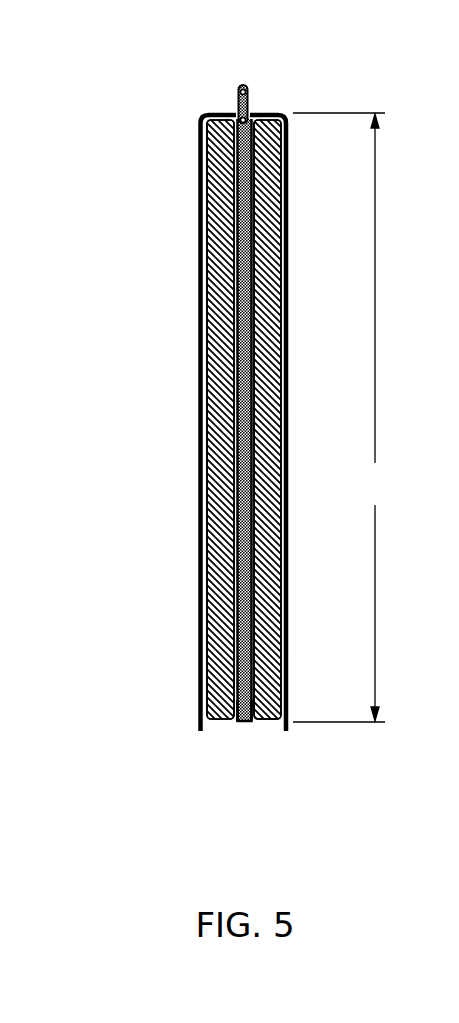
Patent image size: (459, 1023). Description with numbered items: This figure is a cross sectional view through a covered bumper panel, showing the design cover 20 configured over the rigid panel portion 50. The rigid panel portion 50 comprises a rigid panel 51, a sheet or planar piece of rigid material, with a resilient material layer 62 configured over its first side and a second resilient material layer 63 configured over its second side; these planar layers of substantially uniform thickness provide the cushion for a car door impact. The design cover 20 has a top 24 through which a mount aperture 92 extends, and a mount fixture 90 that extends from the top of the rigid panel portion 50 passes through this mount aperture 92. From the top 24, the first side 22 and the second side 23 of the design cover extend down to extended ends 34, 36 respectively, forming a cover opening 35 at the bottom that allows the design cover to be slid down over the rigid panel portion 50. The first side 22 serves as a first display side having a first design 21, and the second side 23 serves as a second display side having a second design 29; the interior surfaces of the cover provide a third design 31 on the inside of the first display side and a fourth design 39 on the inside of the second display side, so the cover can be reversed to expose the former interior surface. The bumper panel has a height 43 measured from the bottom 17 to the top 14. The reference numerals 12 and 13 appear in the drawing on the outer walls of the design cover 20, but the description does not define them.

The first housing side wall 12 is at (198, 500).
The second housing side wall 13 is at (288, 462).
The top 14 is at (272, 116).
The bottom 17 is at (202, 733).
The design cover 20 is at (225, 106).
The first design 21 is at (200, 317).
The first side 22 is at (198, 363).
The second side 23 is at (288, 387).
The top of the design cover 24 is at (229, 118).
The second design 29 is at (288, 333).
The third design 31 is at (212, 300).
The extended end 34 is at (202, 732).
The cover opening 35 is at (257, 726).
The extended end 36 is at (285, 733).
The fourth design 39 is at (278, 305).
The height 43 is at (341, 417).
The rigid panel portion 50 is at (190, 461).
The rigid panel 51 is at (243, 722).
The resilient material layer 62 is at (172, 419).
The second resilient material layer 63 is at (306, 464).
The mount fixture 90 is at (254, 82).
The mount aperture 92 is at (250, 104).